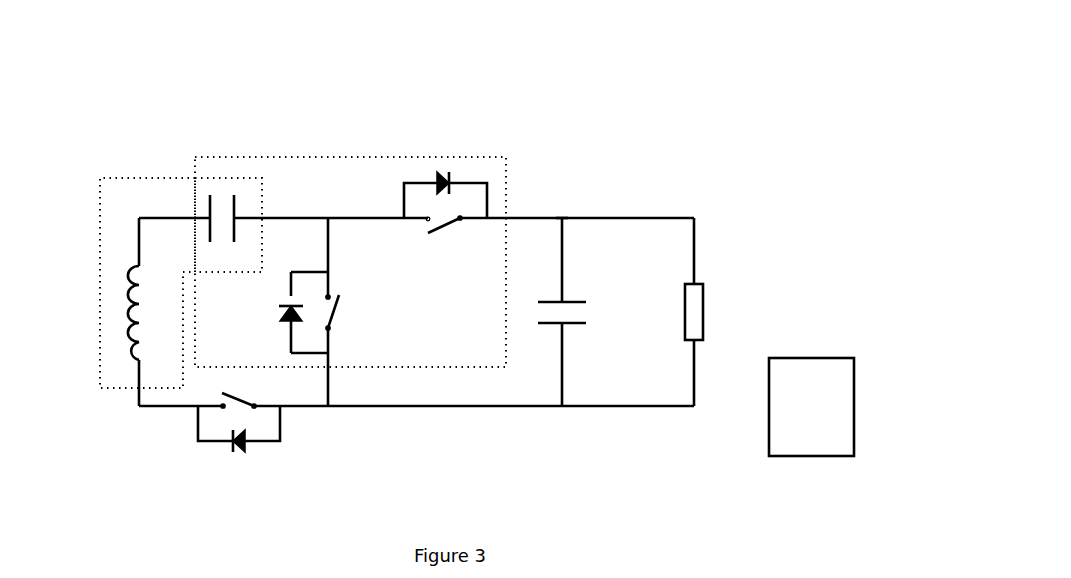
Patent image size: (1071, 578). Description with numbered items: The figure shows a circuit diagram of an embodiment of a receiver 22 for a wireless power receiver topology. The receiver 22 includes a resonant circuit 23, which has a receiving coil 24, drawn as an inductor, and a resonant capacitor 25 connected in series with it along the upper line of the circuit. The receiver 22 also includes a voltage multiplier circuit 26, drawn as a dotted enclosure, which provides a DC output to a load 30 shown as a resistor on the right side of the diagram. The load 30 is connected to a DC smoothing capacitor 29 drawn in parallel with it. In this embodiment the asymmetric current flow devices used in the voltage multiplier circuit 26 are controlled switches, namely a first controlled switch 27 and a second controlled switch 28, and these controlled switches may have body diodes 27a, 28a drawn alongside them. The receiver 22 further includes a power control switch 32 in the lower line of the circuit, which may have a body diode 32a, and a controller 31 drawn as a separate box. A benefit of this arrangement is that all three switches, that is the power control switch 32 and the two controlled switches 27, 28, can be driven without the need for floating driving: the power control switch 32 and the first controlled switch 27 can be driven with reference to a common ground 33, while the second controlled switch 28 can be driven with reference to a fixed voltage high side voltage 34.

The receiver 22 is at (641, 82).
The resonant circuit 23 is at (133, 178).
The receiving coil 24 is at (125, 317).
The resonant capacitor 25 is at (234, 200).
The voltage multiplier circuit 26 is at (342, 157).
The first controlled switch 27 is at (328, 328).
The body diode 27a is at (290, 315).
The second controlled switch 28 is at (460, 218).
The body diode 28a is at (445, 176).
The DC smoothing capacitor 29 is at (576, 300).
The load 30 is at (703, 308).
The controller 31 is at (812, 358).
The power control switch 32 is at (222, 407).
The body diode 32a is at (237, 455).
The common ground 33 is at (322, 376).
The fixed voltage high side voltage 34 is at (562, 218).